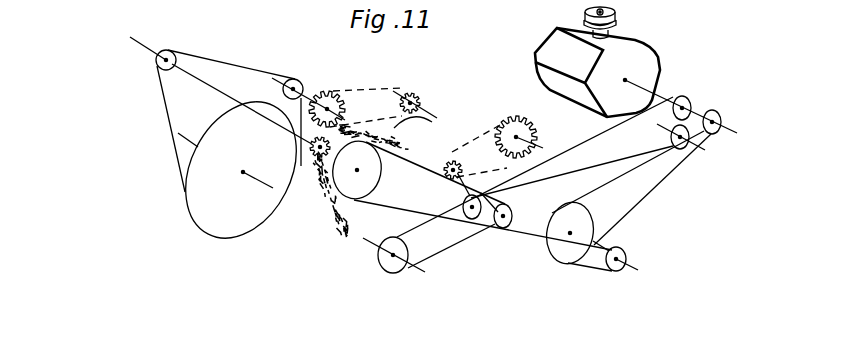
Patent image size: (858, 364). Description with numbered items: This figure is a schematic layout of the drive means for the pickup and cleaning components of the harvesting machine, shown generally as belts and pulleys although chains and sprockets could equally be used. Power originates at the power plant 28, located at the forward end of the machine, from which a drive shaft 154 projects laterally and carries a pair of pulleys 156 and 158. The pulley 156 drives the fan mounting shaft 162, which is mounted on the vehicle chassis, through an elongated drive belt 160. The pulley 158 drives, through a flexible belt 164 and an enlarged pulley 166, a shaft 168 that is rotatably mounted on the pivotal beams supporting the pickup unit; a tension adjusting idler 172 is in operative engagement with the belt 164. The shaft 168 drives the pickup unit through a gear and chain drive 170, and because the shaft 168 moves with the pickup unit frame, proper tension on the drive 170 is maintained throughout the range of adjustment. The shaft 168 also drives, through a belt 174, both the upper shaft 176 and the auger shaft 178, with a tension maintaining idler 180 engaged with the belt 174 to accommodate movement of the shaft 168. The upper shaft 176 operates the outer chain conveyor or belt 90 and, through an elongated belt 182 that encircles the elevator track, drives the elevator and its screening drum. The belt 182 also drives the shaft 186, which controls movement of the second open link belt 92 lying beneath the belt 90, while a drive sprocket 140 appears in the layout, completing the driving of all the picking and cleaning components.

The power plant 28 is at (637, 58).
The chain conveyor or belt 90 is at (444, 165).
The second chain or open link belt 92 is at (370, 90).
The drive sprocket 140 is at (310, 168).
The drive shaft 154 is at (655, 100).
The pulley 156 is at (690, 97).
The pulley 158 is at (722, 116).
The belt 160 is at (468, 227).
The fan mounting shaft 162 is at (363, 240).
The flexible belt 164 is at (658, 183).
The enlarged pulley 166 is at (586, 223).
The shaft 168 is at (636, 262).
The gear and chain drive 170 is at (468, 143).
The tension adjusting idler 172 is at (697, 148).
The belt 174 is at (527, 252).
The upper shaft 176 is at (357, 170).
The auger shaft 178 is at (457, 198).
The tension maintaining idler 180 is at (514, 203).
The elongated belt 182 is at (172, 133).
The shaft 186 is at (307, 96).